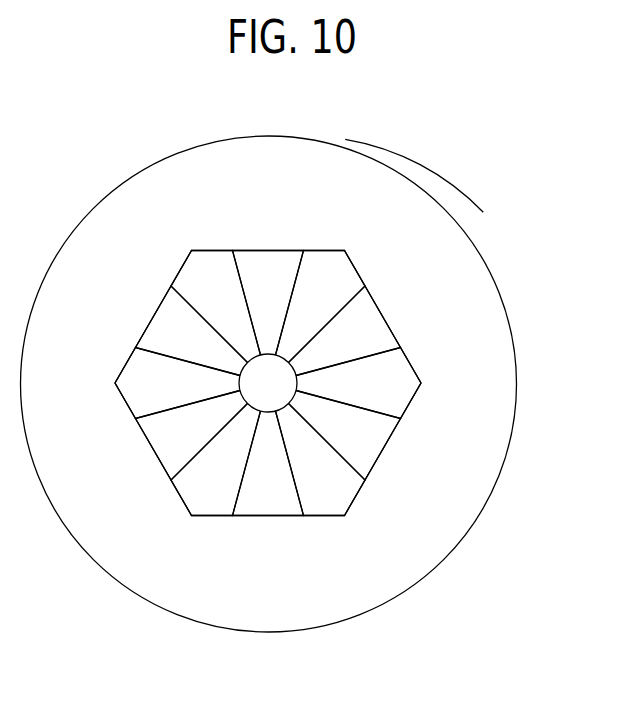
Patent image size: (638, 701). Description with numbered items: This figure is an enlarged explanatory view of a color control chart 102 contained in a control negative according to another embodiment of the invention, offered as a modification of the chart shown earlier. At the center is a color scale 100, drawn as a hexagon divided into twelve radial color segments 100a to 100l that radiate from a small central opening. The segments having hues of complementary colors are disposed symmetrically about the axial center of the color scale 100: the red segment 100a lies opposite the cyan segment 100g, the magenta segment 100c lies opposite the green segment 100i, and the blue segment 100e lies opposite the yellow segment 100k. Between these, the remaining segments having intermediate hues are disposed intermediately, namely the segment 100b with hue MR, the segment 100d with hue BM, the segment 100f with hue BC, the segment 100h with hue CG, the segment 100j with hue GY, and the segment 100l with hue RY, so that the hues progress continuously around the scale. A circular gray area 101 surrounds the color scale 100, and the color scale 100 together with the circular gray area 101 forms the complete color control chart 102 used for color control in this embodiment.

The color scale 100 is at (413, 368).
The radial color segment 100a is at (378, 330).
The radial color segment 100b is at (355, 267).
The radial color segment 100c is at (273, 255).
The radial color segment 100d is at (193, 260).
The radial color segment 100e is at (162, 317).
The radial color segment 100f is at (128, 387).
The radial color segment 100g is at (155, 447).
The radial color segment 100h is at (192, 518).
The radial color segment 100i is at (258, 512).
The radial color segment 100j is at (357, 497).
The radial color segment 100k is at (380, 445).
The radial color segment 100l is at (410, 380).
The circular gray area 101 is at (448, 230).
The color control chart 102 is at (395, 165).